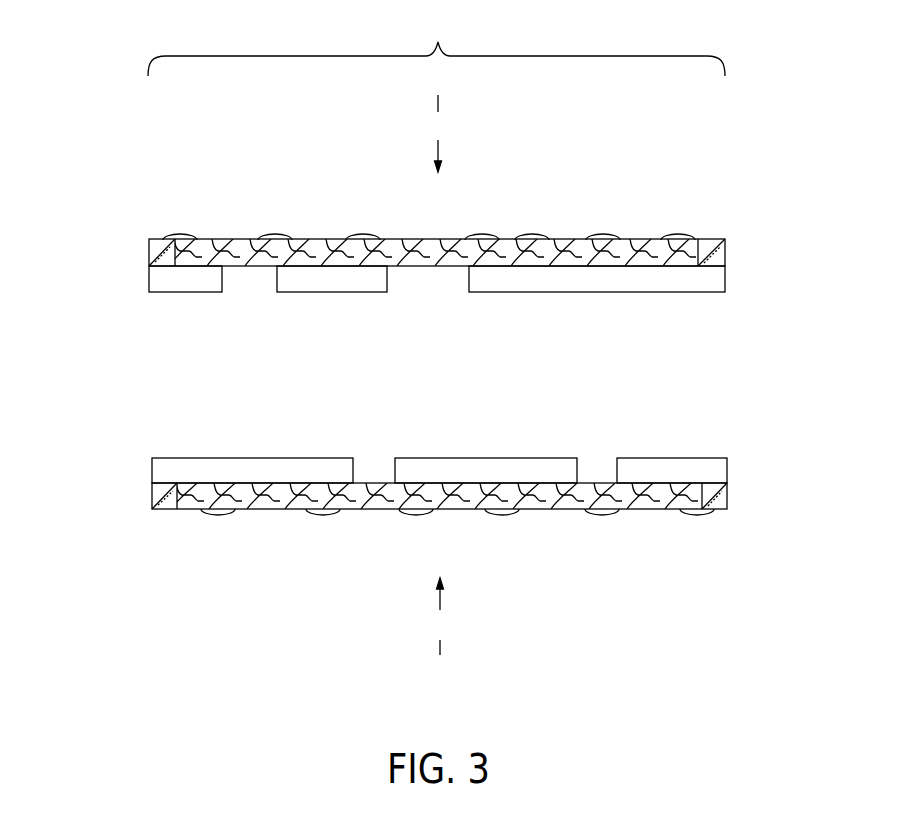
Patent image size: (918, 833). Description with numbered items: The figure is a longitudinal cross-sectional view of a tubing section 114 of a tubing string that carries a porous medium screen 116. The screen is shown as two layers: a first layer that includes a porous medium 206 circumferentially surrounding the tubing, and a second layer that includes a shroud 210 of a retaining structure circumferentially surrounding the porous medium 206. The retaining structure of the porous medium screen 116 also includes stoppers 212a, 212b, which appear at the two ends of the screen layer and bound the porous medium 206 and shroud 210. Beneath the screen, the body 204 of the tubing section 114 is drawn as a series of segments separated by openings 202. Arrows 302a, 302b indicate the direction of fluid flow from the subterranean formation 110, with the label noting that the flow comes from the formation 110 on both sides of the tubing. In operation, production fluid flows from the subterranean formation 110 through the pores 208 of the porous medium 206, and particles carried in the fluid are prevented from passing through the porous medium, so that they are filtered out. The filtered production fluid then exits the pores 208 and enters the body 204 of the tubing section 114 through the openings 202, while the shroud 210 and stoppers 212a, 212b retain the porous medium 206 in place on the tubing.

The tubing section 114 is at (438, 38).
The subterranean formation 110 is at (437, 381).
The porous medium screen 116 is at (733, 240).
The openings 202 is at (248, 291).
The body of the tubing section 204 is at (702, 300).
The porous medium 206 is at (505, 246).
The pores 208 is at (245, 248).
The shroud 210 is at (600, 232).
The stopper 212a is at (152, 250).
The stopper 212b is at (711, 250).
The arrow 302a is at (441, 133).
The arrow 302b is at (440, 616).